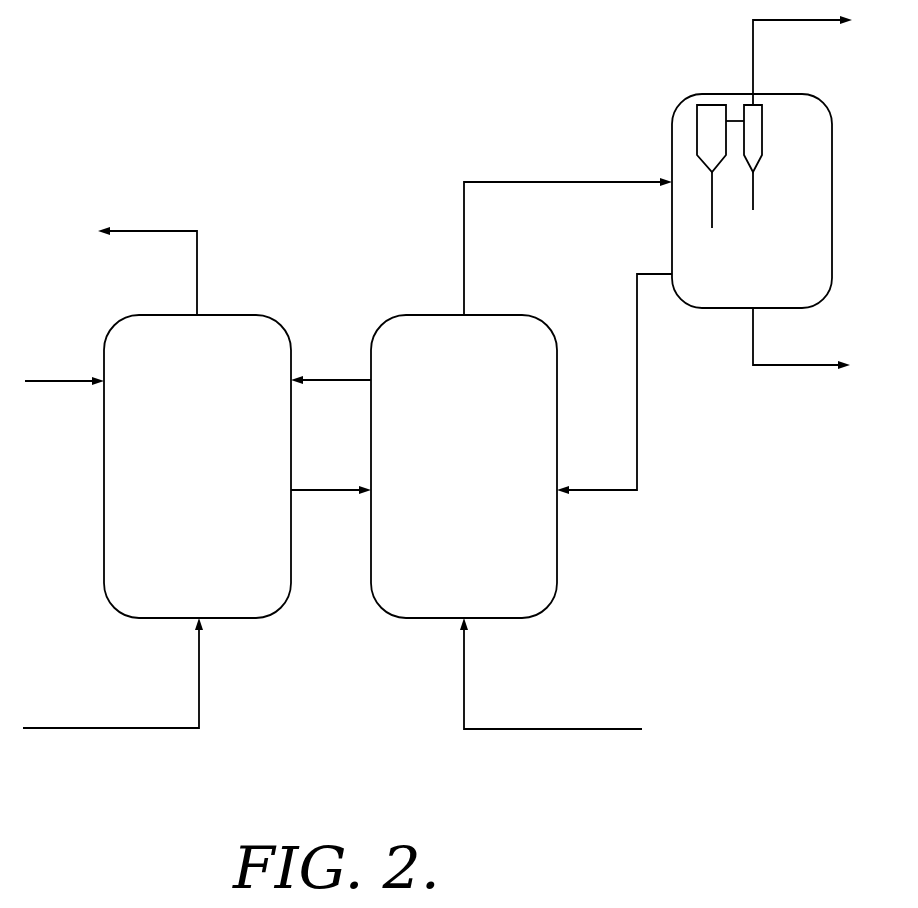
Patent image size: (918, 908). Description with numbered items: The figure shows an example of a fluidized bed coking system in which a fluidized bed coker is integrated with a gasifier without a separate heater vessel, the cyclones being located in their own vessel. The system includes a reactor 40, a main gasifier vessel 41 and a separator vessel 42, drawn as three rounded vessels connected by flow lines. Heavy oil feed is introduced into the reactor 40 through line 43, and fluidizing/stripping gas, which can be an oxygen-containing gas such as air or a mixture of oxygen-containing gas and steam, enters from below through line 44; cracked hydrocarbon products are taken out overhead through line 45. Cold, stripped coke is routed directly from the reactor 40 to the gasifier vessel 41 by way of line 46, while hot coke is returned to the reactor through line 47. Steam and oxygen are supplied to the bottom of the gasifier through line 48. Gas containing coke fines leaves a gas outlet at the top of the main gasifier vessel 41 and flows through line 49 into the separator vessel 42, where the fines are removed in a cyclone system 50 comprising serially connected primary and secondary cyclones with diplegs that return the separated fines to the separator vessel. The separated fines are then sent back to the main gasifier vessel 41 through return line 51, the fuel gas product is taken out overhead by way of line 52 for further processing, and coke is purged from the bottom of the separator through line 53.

The reactor 40 is at (208, 467).
The main gasifier vessel 41 is at (479, 455).
The separator vessel 42 is at (762, 273).
The line 43 is at (62, 383).
The line 44 is at (167, 729).
The line 45 is at (160, 230).
The line 46 is at (321, 492).
The line 47 is at (335, 378).
The line 48 is at (567, 731).
The line 49 is at (553, 180).
The cyclone system 50 is at (762, 140).
The return line 51 is at (638, 441).
The line 52 is at (710, 92).
The line 53 is at (783, 367).